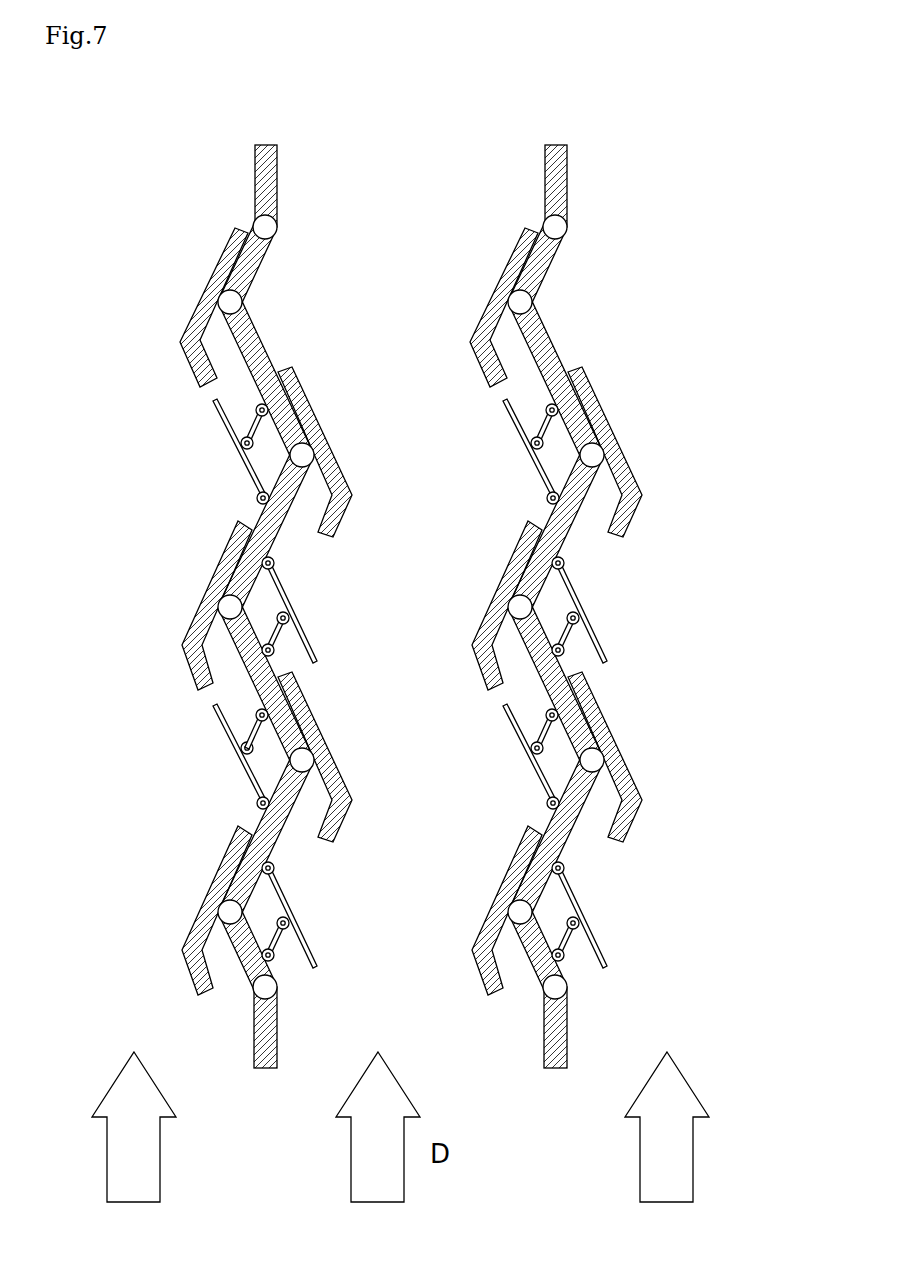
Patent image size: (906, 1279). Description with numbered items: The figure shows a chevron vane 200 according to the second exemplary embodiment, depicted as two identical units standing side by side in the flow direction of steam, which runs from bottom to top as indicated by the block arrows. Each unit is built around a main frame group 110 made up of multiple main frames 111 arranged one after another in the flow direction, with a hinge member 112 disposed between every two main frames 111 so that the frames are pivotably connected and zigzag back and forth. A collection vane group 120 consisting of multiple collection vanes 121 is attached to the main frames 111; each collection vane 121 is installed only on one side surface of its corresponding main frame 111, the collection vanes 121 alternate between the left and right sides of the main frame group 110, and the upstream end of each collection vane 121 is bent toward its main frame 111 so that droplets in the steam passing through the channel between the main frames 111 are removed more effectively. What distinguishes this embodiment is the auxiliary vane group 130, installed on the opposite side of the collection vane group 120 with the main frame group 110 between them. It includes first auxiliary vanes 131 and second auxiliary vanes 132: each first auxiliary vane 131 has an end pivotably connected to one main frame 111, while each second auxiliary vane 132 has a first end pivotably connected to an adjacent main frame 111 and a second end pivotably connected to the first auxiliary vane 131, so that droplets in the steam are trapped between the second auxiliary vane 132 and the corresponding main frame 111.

The chevron vane 200 is at (168, 108).
The main frame group 110 is at (647, 251).
The main frame 111 is at (605, 264).
The hinge member 112 is at (622, 217).
The collection vane group 120 is at (656, 452).
The collection vane 121 is at (645, 757).
The auxiliary vane group 130 is at (195, 469).
The first auxiliary vane 131 is at (237, 762).
The second auxiliary vane 132 is at (253, 727).